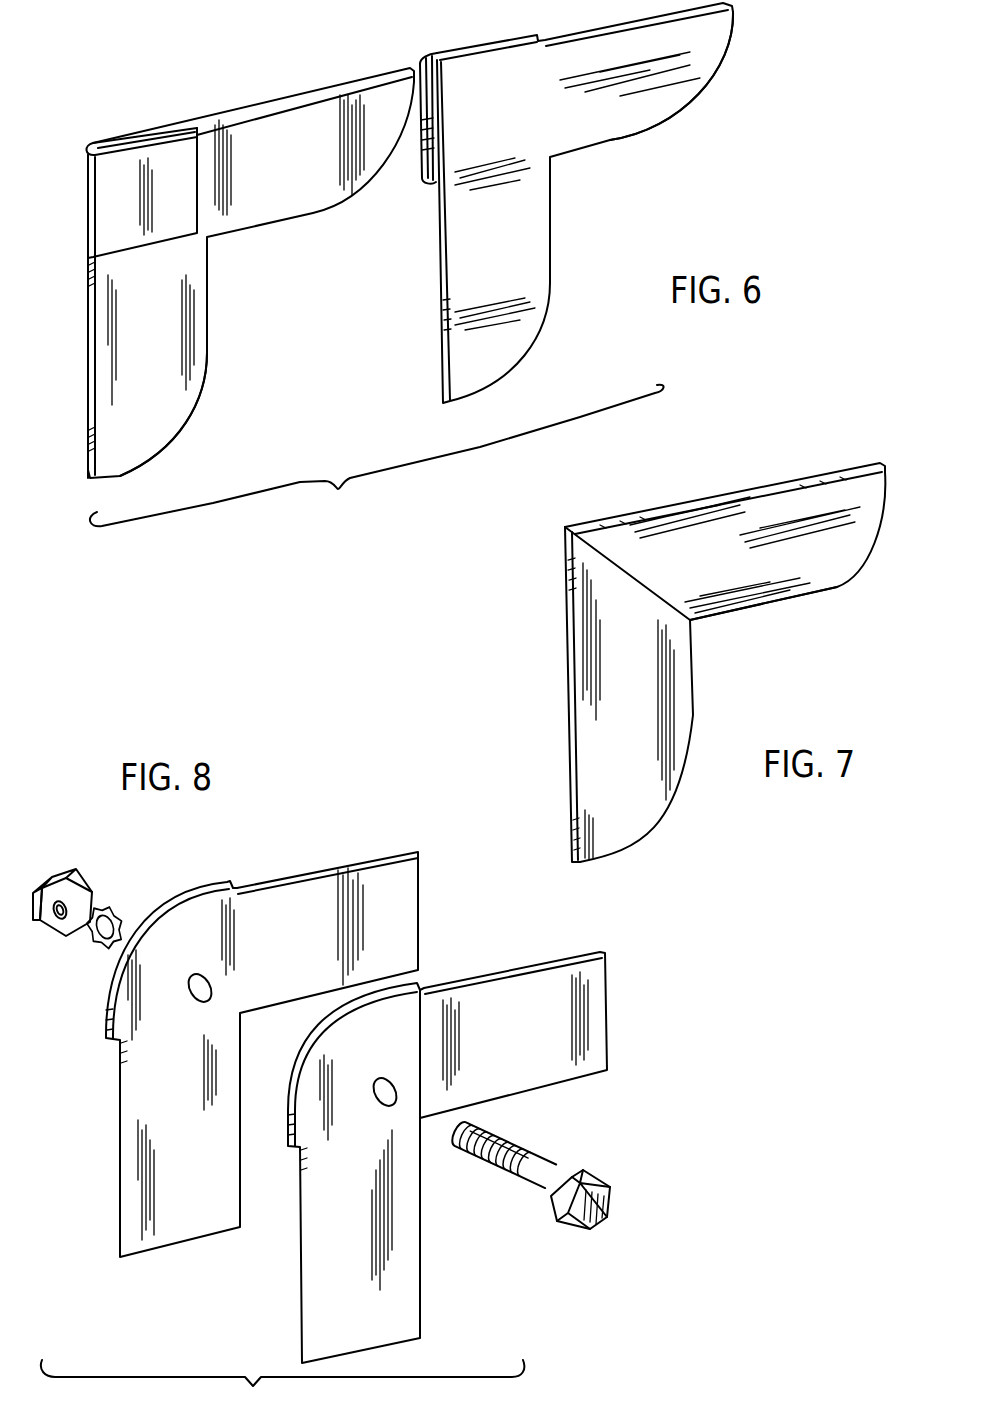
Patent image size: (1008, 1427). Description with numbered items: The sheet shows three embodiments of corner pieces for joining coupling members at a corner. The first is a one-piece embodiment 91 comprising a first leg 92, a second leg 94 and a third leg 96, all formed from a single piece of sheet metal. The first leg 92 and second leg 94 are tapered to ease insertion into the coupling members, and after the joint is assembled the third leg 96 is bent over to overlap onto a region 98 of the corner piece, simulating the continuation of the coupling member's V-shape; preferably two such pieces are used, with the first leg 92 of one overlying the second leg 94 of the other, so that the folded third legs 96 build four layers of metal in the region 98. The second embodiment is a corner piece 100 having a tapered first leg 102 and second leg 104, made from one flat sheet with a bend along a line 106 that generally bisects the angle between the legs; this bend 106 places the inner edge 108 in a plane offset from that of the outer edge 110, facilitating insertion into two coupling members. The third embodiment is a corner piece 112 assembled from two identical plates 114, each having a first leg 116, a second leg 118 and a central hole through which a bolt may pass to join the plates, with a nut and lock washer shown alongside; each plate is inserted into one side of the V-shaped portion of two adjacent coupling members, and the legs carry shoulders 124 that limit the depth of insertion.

In FIG. 6, the one-piece corner piece embodiment 91 is at (220, 248).
In FIG. 6, the first leg 92 is at (357, 173).
In FIG. 6, the second leg 94 is at (150, 422).
In FIG. 6, the third leg 96 is at (163, 158).
In FIG. 6, the region 98 is at (134, 350).
In FIG. 7, the corner piece 100 is at (566, 511).
In FIG. 7, the first leg 102 is at (610, 690).
In FIG. 7, the second leg 104 is at (810, 498).
In FIG. 7, the bend line 106 is at (640, 577).
In FIG. 7, the inner edge 108 is at (810, 593).
In FIG. 7, the outer edge 110 is at (762, 492).
In FIG. 8, the corner piece 112 is at (340, 855).
In FIG. 8, the plate 114 is at (547, 1080).
In FIG. 8, the first leg 116 is at (413, 1278).
In FIG. 8, the second leg 118 is at (593, 1043).
In FIG. 8, the shoulders 124 is at (108, 1040).